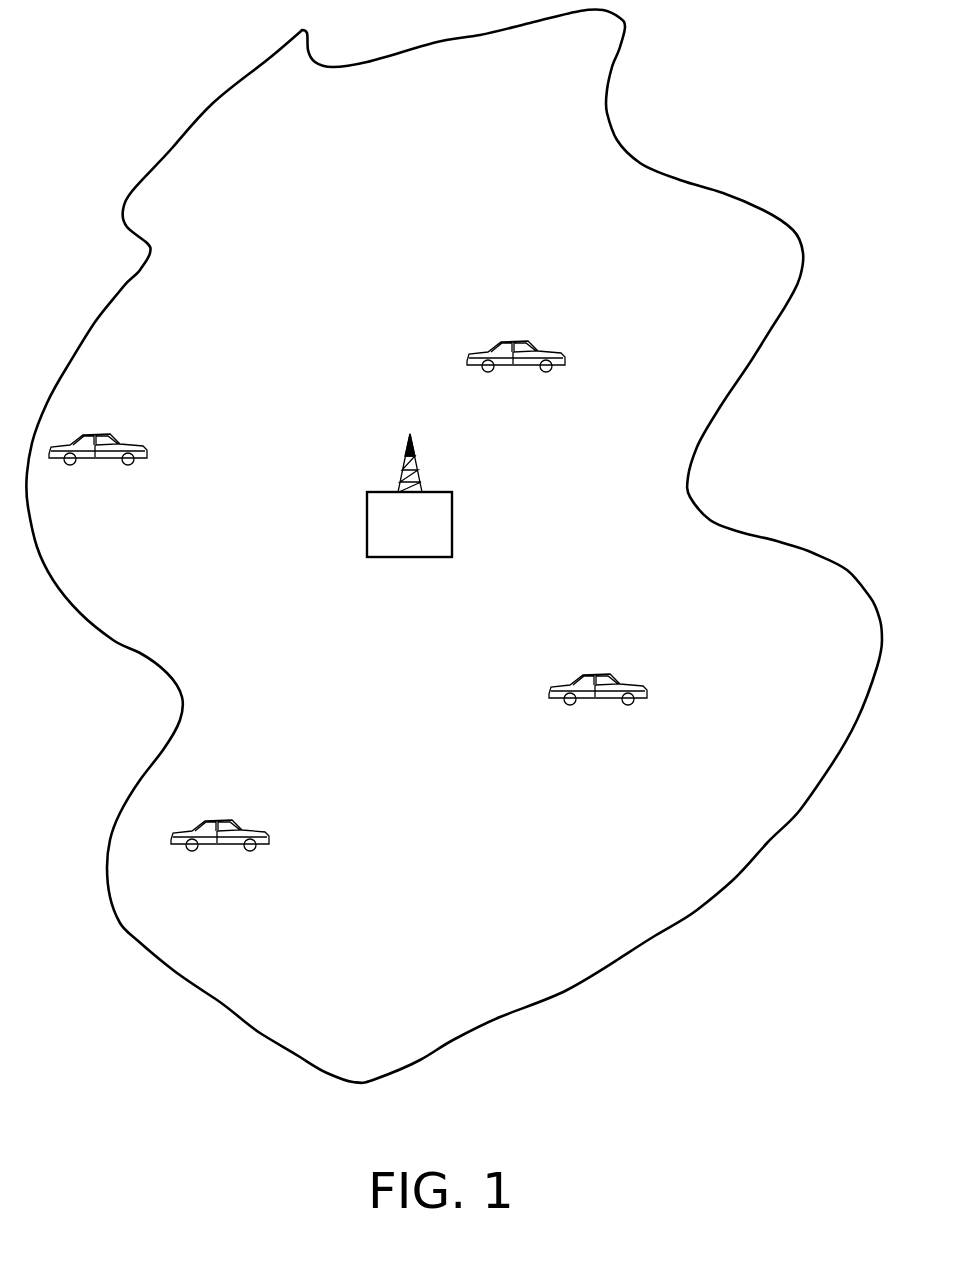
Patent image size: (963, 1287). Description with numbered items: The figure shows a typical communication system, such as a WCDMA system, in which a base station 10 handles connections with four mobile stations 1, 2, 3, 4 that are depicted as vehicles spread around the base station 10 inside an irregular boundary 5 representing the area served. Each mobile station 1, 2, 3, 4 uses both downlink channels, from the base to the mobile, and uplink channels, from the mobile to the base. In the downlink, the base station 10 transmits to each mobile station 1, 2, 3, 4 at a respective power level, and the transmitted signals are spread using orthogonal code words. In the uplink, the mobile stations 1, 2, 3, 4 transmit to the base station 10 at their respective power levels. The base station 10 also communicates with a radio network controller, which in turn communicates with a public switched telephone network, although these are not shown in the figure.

The mobile station 1 is at (608, 678).
The mobile station 2 is at (233, 823).
The mobile station 3 is at (536, 341).
The mobile station 4 is at (113, 435).
The cell / coverage area 5 is at (753, 860).
The base station 10 is at (452, 508).